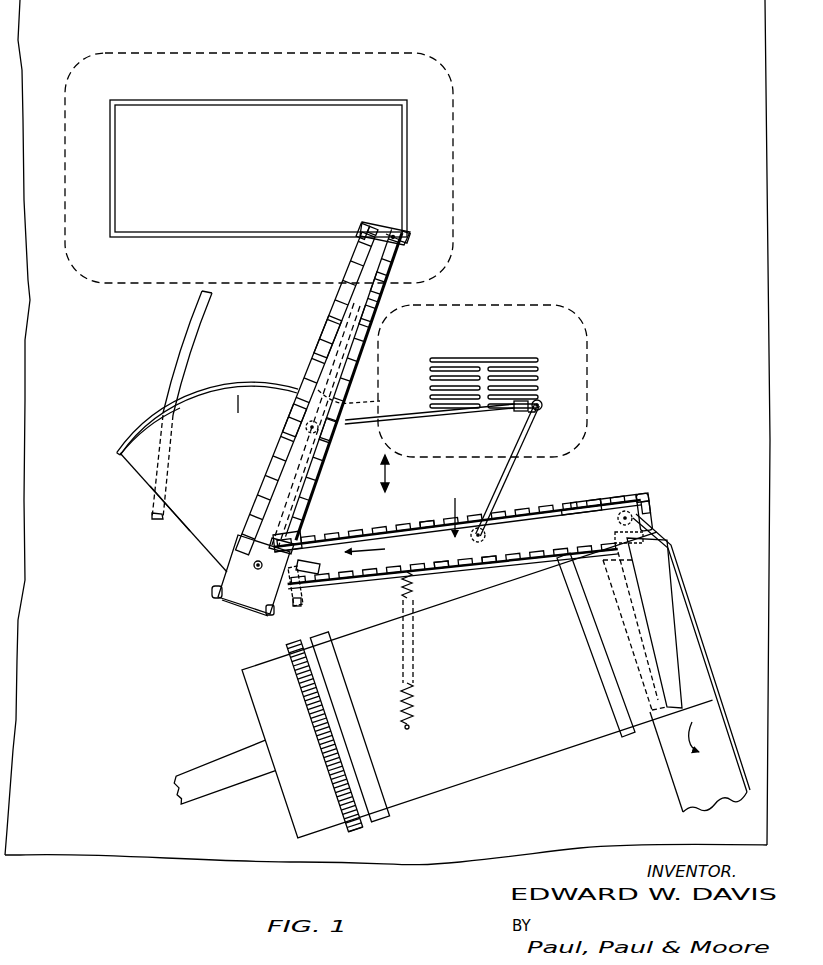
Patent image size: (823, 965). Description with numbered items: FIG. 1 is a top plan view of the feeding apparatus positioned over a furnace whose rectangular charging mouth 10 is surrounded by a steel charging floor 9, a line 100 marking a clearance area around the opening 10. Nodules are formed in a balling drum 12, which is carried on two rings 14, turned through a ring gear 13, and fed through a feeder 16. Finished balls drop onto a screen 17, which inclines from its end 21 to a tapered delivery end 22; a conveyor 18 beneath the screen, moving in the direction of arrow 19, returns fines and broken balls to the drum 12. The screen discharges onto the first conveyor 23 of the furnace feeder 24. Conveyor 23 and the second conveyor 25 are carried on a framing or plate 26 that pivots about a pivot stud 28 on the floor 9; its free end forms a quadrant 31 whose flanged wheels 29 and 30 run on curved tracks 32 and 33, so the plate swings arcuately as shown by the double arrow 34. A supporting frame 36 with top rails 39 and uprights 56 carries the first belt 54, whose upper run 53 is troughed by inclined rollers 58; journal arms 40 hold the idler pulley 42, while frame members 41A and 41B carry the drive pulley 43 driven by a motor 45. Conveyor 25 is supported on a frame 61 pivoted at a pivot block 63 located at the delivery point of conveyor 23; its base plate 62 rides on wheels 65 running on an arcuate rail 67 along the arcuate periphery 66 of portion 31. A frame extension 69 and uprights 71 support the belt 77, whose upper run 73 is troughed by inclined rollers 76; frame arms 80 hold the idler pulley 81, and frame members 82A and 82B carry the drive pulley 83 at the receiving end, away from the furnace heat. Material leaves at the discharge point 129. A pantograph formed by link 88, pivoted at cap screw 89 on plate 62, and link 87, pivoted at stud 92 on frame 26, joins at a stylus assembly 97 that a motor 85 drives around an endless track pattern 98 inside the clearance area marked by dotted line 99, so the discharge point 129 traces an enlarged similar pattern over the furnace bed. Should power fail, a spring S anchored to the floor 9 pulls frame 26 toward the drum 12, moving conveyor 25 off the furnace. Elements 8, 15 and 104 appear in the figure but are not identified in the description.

The charging floor 9 is at (82, 824).
The clearance line 100 is at (320, 52).
The furnace charging mouth 10 is at (330, 100).
The second conveyor 25 is at (352, 270).
The frame extension 69 is at (323, 336).
The base plate 62 is at (285, 418).
The frame arms 80 is at (361, 224).
The delivery end idler pulley 81 is at (369, 220).
The upper run 73 is at (384, 237).
The discharge point 129 is at (395, 235).
The conveyor belt 77 is at (380, 264).
The inclined rollers 76 is at (392, 289).
The uprights 71 is at (385, 320).
The pivot cap screw 89 is at (334, 445).
The curved track 33 is at (181, 356).
The flanged wheel 30 is at (166, 449).
The arcuate rail 67 is at (213, 389).
The arcuate periphery 66 is at (146, 436).
The quadrant 31 is at (239, 395).
The furnace feeder 24 is at (207, 561).
The supporting frame 26 is at (181, 523).
The flanged wheels 29 is at (312, 373).
The flanged supporting wheels 65 is at (300, 391).
The pantograph link 88 is at (426, 416).
The electric motor 85 is at (518, 411).
The stylus assembly 97 is at (545, 401).
The pivot bracket 104 is at (538, 413).
The pantograph link 87 is at (527, 437).
The pivot stud 92 is at (487, 535).
The clearance area line 99 is at (557, 303).
The stylus track pattern 98 is at (512, 357).
The double arrow 34 is at (388, 473).
The upper run 53 is at (526, 510).
The top rails 39 is at (556, 503).
The supporting frame 36 is at (590, 497).
The supporting uprights 56 is at (421, 515).
The inclined rollers 58 is at (480, 562).
The first conveyor belt 54 is at (466, 509).
The direction arrow 8 is at (373, 547).
The first conveyor 23 is at (615, 490).
The pivot stud 28 is at (649, 505).
The journal arms 40 is at (642, 494).
The idler pulley 42 is at (650, 497).
The tapered delivery end 22 is at (636, 516).
The frame member 41B is at (318, 527).
The drive pulley 43 is at (280, 540).
The motor 45 is at (320, 588).
The frame member 41A is at (306, 598).
The curved track 32 is at (296, 607).
The supporting frame 61 is at (250, 613).
The pivot block 63 is at (268, 596).
The frame member 82A is at (222, 593).
The frame member 82B is at (271, 616).
The drive pulley 83 is at (229, 612).
The spring S is at (402, 600).
The balling drum 12 is at (485, 721).
The ring gear 13 is at (363, 824).
The rings 14 is at (390, 812).
The feeder 16 is at (240, 775).
The flap 15 is at (648, 632).
The screen 17 is at (675, 586).
The screen end 21 is at (717, 692).
The conveyor 18 is at (727, 713).
The arrow 19 is at (689, 750).